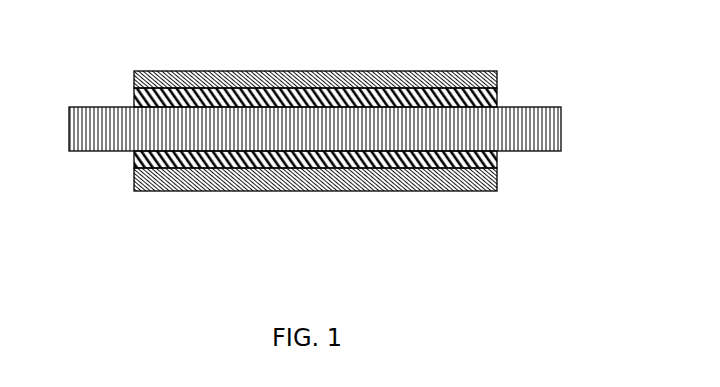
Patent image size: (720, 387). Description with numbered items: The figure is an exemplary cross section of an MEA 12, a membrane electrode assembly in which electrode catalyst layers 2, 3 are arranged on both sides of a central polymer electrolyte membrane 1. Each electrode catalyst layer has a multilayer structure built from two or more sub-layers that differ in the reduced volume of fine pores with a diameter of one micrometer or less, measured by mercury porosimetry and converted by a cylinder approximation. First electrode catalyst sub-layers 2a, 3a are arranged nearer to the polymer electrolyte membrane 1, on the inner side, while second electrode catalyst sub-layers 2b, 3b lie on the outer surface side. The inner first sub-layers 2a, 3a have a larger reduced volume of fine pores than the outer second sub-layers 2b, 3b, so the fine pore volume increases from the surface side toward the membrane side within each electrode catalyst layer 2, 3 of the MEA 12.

The polymer electrolyte membrane 1 is at (532, 129).
The electrode catalyst layer 2 is at (328, 65).
The first electrode catalyst sub-layer 2a is at (134, 98).
The second electrode catalyst sub-layer 2b is at (134, 77).
The electrode catalyst layer 3 is at (321, 191).
The first electrode catalyst sub-layer 3a is at (134, 163).
The second electrode catalyst sub-layer 3b is at (134, 183).
The MEA 12 is at (367, 128).